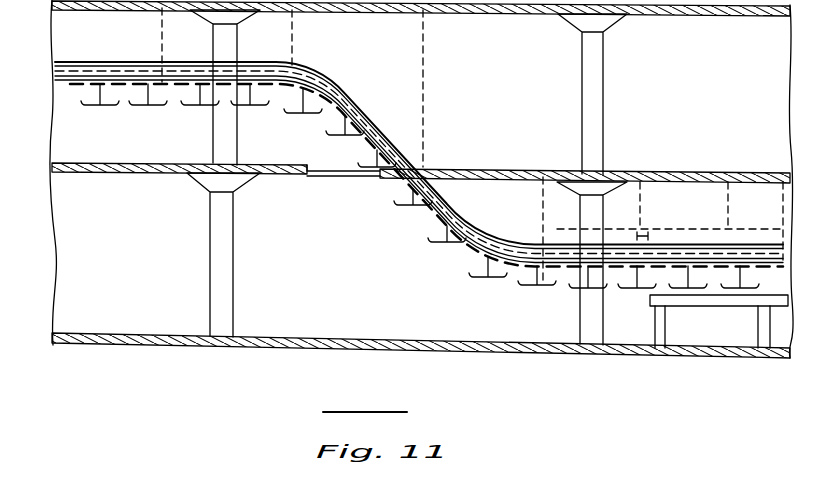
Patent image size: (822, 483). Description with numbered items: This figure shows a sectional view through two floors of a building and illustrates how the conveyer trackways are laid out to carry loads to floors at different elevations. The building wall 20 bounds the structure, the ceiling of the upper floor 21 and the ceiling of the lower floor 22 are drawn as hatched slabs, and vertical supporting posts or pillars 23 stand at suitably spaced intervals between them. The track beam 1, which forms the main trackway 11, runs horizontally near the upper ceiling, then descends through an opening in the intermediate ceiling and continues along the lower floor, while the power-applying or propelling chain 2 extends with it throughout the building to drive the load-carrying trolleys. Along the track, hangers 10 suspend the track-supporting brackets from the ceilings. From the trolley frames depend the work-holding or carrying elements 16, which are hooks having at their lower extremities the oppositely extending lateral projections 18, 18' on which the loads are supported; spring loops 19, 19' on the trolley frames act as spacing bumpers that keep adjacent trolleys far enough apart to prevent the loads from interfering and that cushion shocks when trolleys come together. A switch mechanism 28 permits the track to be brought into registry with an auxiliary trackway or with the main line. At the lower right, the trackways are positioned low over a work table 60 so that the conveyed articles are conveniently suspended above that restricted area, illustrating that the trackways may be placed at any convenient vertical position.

The track beam 1 is at (373, 105).
The propelling chain 2 is at (490, 232).
The hanger 10 is at (162, 22).
The main trackway 11 is at (330, 100).
The work-holding or carrying element 16 is at (147, 100).
The lateral projection 18 is at (147, 115).
The lateral projection 18' is at (189, 114).
The spring loop 19 is at (419, 145).
The spring loop 19' is at (419, 152).
The wall of the building 20 is at (60, 228).
The ceiling of the upper floor 21 is at (510, 15).
The ceiling of the lower floor 22 is at (275, 178).
The vertical supporting post or pillar 23 is at (598, 110).
The switch mechanism 28 is at (568, 263).
The table 60 is at (717, 300).